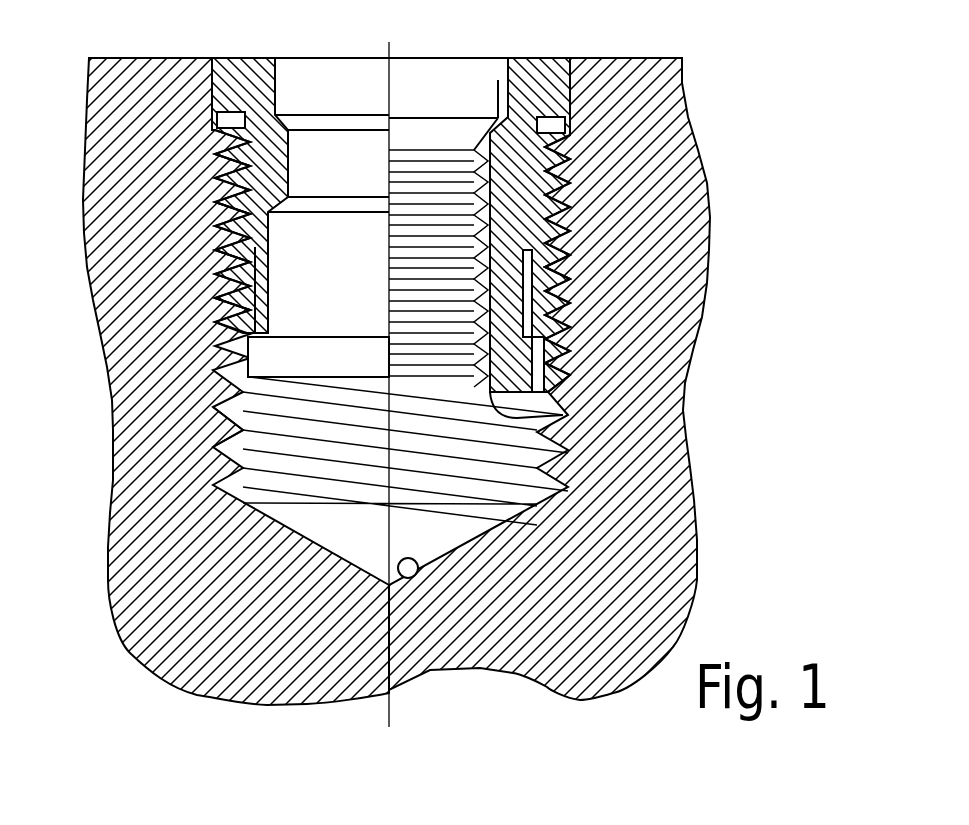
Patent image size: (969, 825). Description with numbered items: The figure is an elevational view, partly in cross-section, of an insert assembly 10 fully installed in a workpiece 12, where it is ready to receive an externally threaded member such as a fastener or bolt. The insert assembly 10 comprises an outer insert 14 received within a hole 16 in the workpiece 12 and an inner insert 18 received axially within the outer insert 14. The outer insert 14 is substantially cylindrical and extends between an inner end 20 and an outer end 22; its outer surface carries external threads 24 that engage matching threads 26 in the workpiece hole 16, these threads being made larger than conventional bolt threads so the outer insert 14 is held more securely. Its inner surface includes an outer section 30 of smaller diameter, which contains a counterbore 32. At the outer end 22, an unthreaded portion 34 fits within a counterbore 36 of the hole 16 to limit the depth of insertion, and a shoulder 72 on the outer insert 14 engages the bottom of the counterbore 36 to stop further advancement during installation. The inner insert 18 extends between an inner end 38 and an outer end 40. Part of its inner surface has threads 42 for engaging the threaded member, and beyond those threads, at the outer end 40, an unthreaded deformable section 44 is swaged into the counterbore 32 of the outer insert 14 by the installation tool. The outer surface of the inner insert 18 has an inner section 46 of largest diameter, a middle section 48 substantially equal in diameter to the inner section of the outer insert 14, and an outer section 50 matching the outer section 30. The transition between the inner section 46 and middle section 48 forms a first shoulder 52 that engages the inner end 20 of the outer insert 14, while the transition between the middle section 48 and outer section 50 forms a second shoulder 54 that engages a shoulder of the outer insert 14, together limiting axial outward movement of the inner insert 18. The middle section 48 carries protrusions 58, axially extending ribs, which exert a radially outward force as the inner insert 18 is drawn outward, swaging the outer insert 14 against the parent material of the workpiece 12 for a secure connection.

The insert assembly 10 is at (735, 82).
The workpiece 12 is at (117, 56).
The outer insert 14 is at (210, 200).
The hole 16 is at (416, 575).
The inner insert 18 is at (240, 247).
The inner end 20 is at (537, 337).
The outer end 22 is at (653, 60).
The external threads 24 is at (568, 255).
The threads 26 is at (235, 398).
The outer section 30 is at (292, 164).
The counterbore 32 is at (278, 84).
The unthreaded portion 34 is at (208, 88).
The counterbore 36 is at (548, 120).
The inner end 38 is at (560, 418).
The outer end 40 is at (500, 58).
The threads 42 is at (395, 170).
The unthreaded deformable section 44 is at (497, 87).
The inner section 46 is at (247, 358).
The middle section 48 is at (300, 228).
The outer section 50 is at (218, 153).
The first shoulder 52 is at (238, 318).
The second shoulder 54 is at (290, 190).
The protrusions 58 is at (383, 283).
The shoulder 72 is at (217, 120).